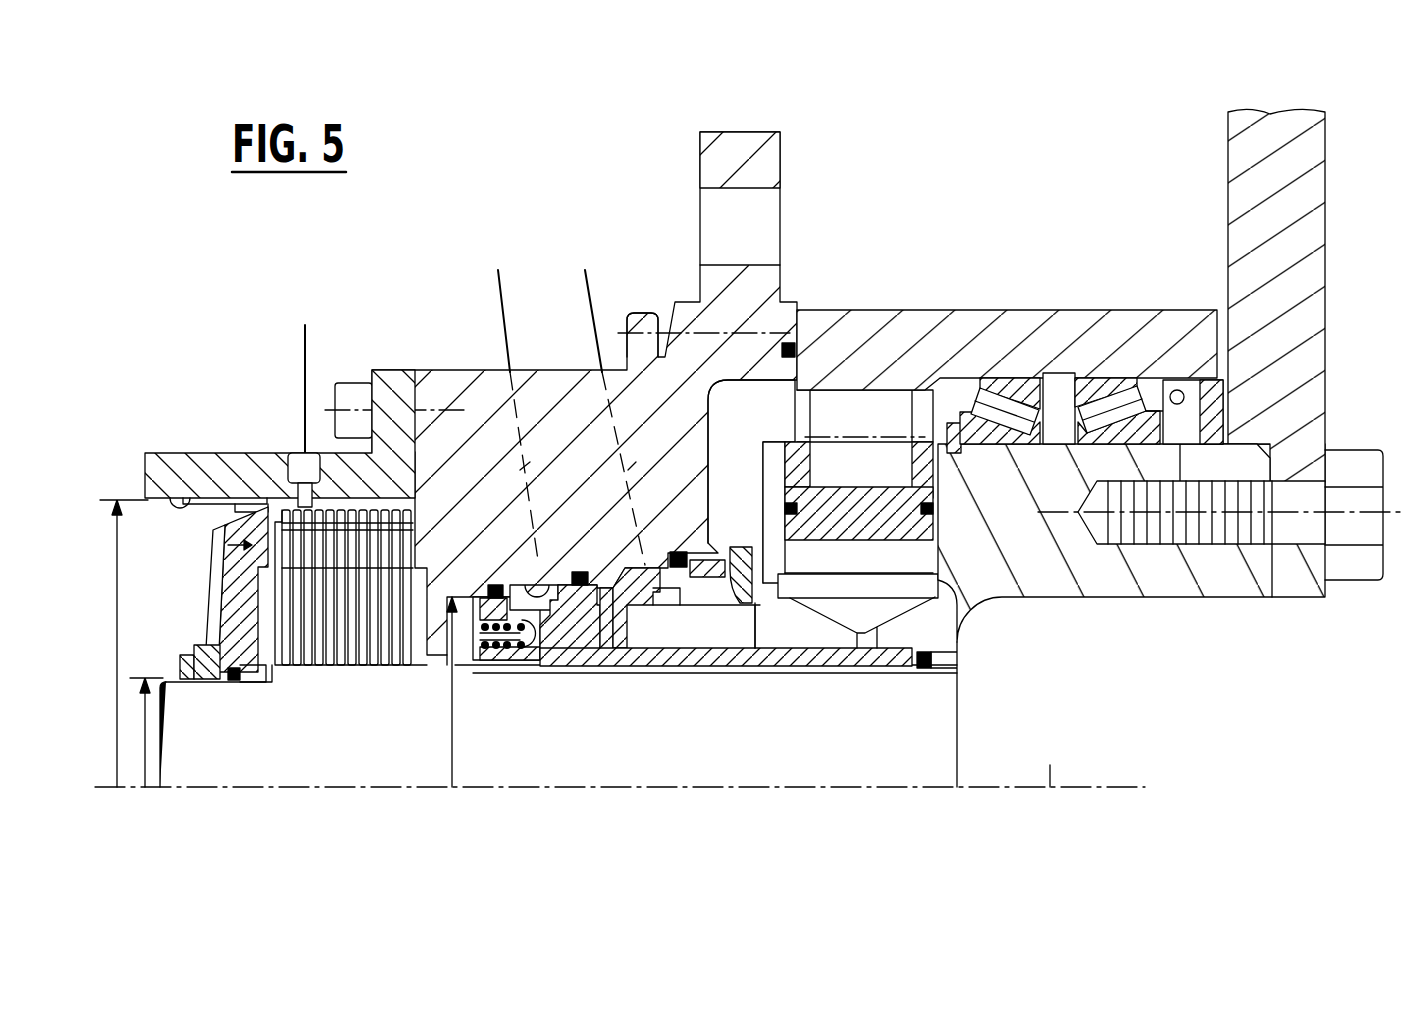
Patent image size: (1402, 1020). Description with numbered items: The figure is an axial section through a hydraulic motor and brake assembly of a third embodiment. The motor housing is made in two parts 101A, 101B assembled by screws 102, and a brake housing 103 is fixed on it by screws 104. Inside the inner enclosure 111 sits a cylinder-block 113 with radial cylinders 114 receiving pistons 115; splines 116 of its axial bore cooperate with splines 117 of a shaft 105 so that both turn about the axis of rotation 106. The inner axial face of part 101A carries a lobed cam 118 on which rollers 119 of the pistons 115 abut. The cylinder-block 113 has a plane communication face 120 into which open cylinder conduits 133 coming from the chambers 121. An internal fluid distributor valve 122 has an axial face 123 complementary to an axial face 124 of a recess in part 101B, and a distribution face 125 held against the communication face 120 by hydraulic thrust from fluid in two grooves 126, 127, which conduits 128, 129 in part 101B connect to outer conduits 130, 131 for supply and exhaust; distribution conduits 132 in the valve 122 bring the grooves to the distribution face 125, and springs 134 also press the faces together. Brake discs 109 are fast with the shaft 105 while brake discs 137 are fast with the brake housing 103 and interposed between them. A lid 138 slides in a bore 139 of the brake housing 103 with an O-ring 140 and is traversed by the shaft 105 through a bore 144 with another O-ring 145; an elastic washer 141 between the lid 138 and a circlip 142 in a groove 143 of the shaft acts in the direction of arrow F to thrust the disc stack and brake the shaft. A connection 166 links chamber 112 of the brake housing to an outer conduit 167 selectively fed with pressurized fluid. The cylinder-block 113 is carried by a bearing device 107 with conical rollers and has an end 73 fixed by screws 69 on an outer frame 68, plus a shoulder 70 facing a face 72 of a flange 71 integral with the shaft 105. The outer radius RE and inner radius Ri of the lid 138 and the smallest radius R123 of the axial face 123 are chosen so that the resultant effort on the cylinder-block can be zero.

The outer frame 68 is at (1232, 160).
The screws 69 is at (1240, 575).
The shoulder 70 is at (948, 670).
The flange 71 is at (982, 706).
The face 72 is at (922, 668).
The end 73 is at (1278, 465).
The motor housing part 101A is at (1020, 310).
The motor housing part 101B is at (548, 380).
The screws 102 is at (644, 315).
The brake housing 103 is at (158, 455).
The screws 104 is at (353, 400).
The shaft 105 is at (510, 766).
The axis of rotation 106 is at (1055, 765).
The bearing device 107 is at (1115, 410).
The brake discs 109 is at (362, 640).
The inner enclosure 111 is at (756, 420).
The chamber 112 is at (272, 665).
The cylinder-block 113 is at (765, 478).
The radial cylinders 114 is at (925, 556).
The pistons 115 is at (875, 505).
The splines 116 is at (862, 679).
The splines 117 is at (767, 642).
The lobed cam 118 is at (893, 412).
The rollers 119 is at (865, 349).
The communication face 120 is at (747, 548).
The chambers 121 is at (890, 563).
The internal fluid distributor valve 122 is at (650, 667).
The axial face 123 is at (603, 583).
The axial face 124 is at (600, 655).
The distribution face 125 is at (785, 593).
The groove 126 is at (530, 590).
The groove 127 is at (641, 563).
The conduit 128 is at (522, 470).
The conduit 129 is at (628, 470).
The outer conduit 130 is at (498, 270).
The outer conduit 131 is at (585, 270).
The distribution conduits 132 is at (557, 665).
The cylinder conduits 133 is at (840, 655).
The springs 134 is at (502, 670).
The brake discs 137 is at (347, 583).
The lid 138 is at (240, 583).
The bore 139 is at (198, 503).
The O-ring 140 is at (242, 498).
The elastic washer 141 is at (212, 545).
The circlip 142 is at (182, 658).
The groove 143 is at (188, 682).
The bore 144 is at (226, 682).
The O-ring 145 is at (258, 675).
The connection 166 is at (298, 458).
The outer conduit 167 is at (287, 372).
The arrow F is at (232, 562).
The outer radius RE is at (124, 643).
The inner radius Ri is at (143, 732).
The smallest radius R123 is at (450, 727).